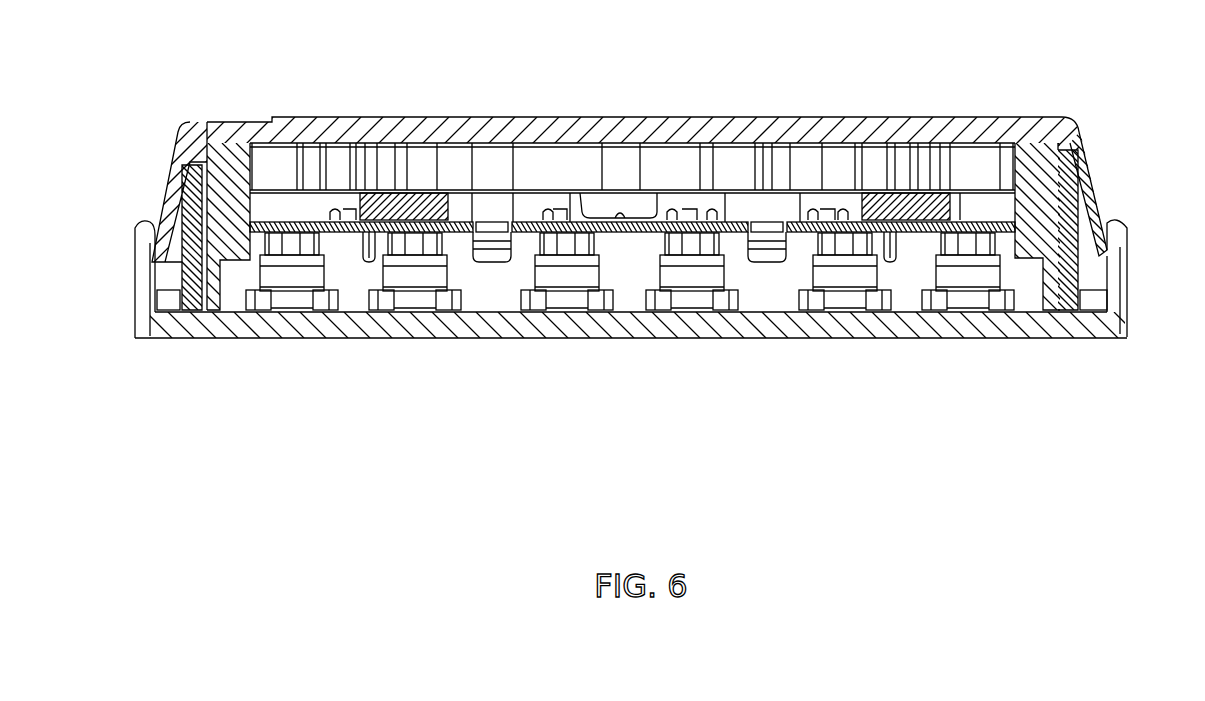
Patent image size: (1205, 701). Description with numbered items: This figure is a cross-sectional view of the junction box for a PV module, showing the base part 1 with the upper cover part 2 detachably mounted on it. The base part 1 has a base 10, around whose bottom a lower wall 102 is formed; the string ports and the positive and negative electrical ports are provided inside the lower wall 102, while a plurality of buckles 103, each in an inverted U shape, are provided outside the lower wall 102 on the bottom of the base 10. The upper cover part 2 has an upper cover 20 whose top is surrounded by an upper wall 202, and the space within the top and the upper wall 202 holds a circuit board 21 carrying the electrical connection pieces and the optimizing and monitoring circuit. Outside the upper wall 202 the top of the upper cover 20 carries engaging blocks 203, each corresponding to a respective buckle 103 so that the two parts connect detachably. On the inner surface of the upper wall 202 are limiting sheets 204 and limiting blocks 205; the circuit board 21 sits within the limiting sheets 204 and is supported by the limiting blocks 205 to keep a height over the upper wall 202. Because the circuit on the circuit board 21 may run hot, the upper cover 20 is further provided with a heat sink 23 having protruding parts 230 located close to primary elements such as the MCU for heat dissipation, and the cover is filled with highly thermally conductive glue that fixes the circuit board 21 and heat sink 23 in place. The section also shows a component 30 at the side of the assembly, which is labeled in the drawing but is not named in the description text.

The base part 1 is at (374, 350).
The upper cover part 2 is at (745, 112).
The base 10 is at (683, 328).
The upper cover 20 is at (502, 128).
The circuit board 21 is at (528, 223).
The heat sink 23 is at (690, 190).
The protruding parts 230 is at (646, 215).
The metal shell 30 is at (1077, 132).
The lower wall 102 is at (193, 278).
The buckles 103 is at (1117, 275).
The upper wall 202 is at (213, 287).
The engaging blocks 203 is at (1097, 191).
The limiting sheets 204 is at (1013, 165).
The limiting blocks 205 is at (767, 255).